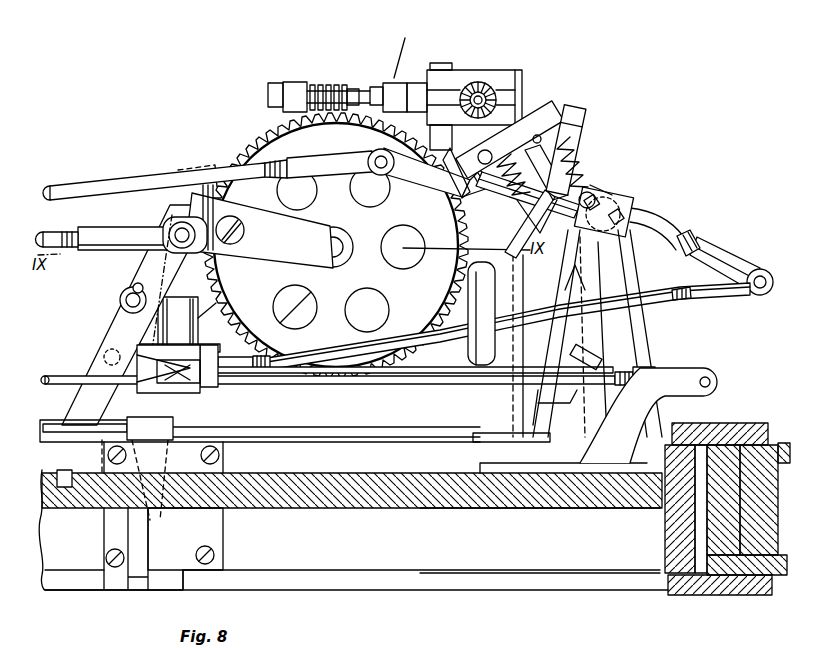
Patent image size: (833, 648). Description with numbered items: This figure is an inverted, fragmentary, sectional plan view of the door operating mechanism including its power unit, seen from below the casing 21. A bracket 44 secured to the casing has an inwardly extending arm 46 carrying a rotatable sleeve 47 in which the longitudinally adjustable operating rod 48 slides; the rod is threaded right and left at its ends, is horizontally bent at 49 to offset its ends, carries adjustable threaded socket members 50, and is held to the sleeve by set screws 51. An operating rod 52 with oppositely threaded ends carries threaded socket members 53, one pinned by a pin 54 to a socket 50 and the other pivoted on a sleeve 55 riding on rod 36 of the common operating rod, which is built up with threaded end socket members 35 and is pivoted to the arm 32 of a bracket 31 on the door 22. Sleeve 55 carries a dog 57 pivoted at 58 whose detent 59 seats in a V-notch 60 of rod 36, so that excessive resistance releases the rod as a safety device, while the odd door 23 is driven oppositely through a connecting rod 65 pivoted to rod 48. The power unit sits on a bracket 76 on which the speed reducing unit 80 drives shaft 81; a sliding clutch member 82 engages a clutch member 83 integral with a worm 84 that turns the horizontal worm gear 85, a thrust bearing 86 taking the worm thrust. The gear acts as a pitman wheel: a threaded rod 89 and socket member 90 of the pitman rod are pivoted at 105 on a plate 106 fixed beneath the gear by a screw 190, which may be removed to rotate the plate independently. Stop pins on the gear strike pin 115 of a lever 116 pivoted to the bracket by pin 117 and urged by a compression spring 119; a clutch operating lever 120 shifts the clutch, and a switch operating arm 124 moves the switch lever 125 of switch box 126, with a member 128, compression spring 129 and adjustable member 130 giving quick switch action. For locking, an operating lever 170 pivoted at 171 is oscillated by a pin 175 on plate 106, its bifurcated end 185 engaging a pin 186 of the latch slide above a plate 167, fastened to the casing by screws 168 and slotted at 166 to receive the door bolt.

The casing 21 is at (690, 595).
The door 22 is at (397, 505).
The door 23 is at (55, 508).
The bracket 31 is at (512, 505).
The arm 32 is at (705, 400).
The threaded end socket member 35 is at (672, 372).
The rod 36 is at (428, 392).
The bracket 44 is at (500, 440).
The arm 46 is at (606, 258).
The sleeve 47 is at (622, 207).
The operating rod 48 is at (536, 201).
The bend 49 is at (655, 210).
The threaded socket member 50 is at (450, 185).
The set screw 51 is at (610, 195).
The operating rod 52 is at (430, 325).
The threaded socket member 53 is at (740, 292).
The pin 54 is at (762, 275).
The sleeve 55 is at (265, 395).
The dog 57 is at (143, 365).
The pivot 58 is at (105, 345).
The detent 59 is at (170, 385).
The V-notch 60 is at (205, 390).
The connecting rod 65 is at (115, 180).
The bracket 76 is at (472, 280).
The speed reducing unit 80 is at (492, 82).
The driving shaft 81 is at (374, 86).
The clutch member 82 is at (397, 82).
The clutch member 83 is at (352, 88).
The worm 84 is at (315, 84).
The worm gear 85 is at (225, 268).
The thrust bearing 86 is at (267, 96).
The threaded rod 89 is at (70, 230).
The threaded socket member 90 is at (95, 245).
The pivot 105 is at (170, 222).
The plate 106 is at (245, 234).
The pin 115 is at (370, 150).
The lever 116 is at (520, 135).
The pin 117 is at (490, 112).
The compression spring 119 is at (450, 232).
The clutch operating lever 120 is at (411, 48).
The switch operating arm 124 is at (603, 350).
The switch lever 125 is at (572, 395).
The switch box 126 is at (537, 404).
The member 128 is at (572, 118).
The compression spring 129 is at (578, 160).
The adjustable member 130 is at (571, 172).
The slot 166 is at (140, 555).
The plate 167 is at (212, 530).
The screw 168 is at (214, 555).
The operating lever 170 is at (133, 280).
The pivot 171 is at (120, 300).
The pin 175 is at (225, 195).
The bifurcated end 185 is at (78, 425).
The pin 186 is at (150, 428).
The screw 190 is at (235, 235).